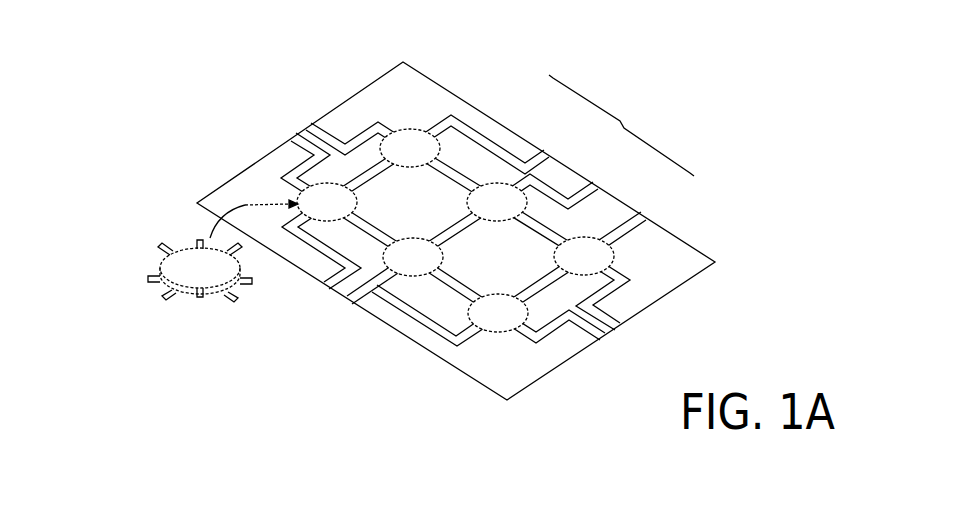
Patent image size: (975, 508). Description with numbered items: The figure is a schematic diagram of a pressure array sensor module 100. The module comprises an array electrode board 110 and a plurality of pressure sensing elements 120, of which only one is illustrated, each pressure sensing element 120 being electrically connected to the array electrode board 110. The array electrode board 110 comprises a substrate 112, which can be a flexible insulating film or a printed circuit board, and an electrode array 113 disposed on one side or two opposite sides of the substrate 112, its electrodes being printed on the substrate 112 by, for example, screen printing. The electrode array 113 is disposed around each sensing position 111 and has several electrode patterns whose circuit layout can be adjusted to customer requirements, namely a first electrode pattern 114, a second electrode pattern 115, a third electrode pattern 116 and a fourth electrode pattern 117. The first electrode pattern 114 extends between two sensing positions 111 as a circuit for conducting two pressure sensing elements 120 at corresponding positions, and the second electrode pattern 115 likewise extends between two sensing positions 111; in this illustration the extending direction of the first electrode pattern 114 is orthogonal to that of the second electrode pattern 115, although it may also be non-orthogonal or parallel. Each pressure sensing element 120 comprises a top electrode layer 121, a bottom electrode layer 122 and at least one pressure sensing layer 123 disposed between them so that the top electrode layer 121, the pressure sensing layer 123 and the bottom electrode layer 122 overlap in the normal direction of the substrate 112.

The pressure array sensor module 100 is at (60, 33).
The array electrode board 110 is at (290, 118).
The sensing position 111 is at (417, 128).
The substrate 112 is at (488, 128).
The electrode array 113 is at (621, 125).
The first electrode pattern 114 is at (560, 245).
The second electrode pattern 115 is at (470, 250).
The third electrode pattern 116 is at (540, 193).
The fourth electrode pattern 117 is at (472, 172).
The pressure sensing element 120 is at (165, 230).
The top electrode layer 121 is at (226, 268).
The bottom electrode layer 122 is at (193, 300).
The pressure sensing layer 123 is at (214, 300).